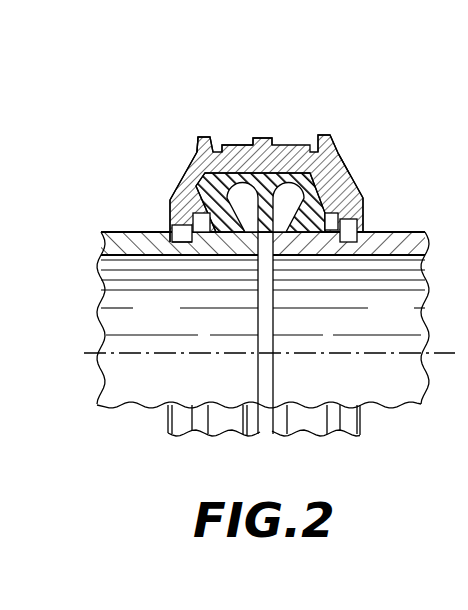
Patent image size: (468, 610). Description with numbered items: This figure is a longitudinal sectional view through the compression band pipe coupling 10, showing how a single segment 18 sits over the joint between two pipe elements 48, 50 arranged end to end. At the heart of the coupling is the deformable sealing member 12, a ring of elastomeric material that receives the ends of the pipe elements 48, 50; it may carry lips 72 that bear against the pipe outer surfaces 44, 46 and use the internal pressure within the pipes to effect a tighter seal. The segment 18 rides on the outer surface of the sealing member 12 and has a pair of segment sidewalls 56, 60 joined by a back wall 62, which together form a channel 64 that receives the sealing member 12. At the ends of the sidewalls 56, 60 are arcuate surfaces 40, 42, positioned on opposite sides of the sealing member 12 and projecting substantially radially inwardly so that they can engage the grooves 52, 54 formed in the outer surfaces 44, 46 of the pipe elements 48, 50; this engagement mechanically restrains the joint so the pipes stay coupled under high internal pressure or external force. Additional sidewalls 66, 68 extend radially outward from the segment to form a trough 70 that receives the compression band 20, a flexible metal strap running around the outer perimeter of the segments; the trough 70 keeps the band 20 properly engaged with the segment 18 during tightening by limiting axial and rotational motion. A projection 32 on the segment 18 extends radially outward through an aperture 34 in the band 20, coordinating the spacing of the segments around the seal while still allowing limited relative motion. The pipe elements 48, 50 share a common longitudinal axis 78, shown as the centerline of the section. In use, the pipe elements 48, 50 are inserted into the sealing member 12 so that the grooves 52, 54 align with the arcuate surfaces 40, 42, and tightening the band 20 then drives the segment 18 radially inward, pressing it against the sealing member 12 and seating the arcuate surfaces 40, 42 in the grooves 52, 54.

The compression band pipe coupling 10 is at (148, 436).
The sealing member 12 is at (357, 174).
The segments 18 is at (350, 148).
The compression band 20 is at (292, 147).
The projection 32 is at (256, 147).
The aperture 34 is at (238, 148).
The arcuate surface 40 is at (168, 210).
The arcuate surface 42 is at (365, 208).
The outer surface 44 is at (152, 231).
The outer surface 46 is at (370, 231).
The pipe element 48 is at (190, 390).
The pipe element 50 is at (365, 392).
The groove 52 is at (176, 240).
The groove 54 is at (343, 242).
The segment sidewall 56 is at (183, 186).
The segment sidewall 60 is at (360, 153).
The back wall 62 is at (230, 148).
The channel 64 is at (195, 152).
The additional sidewall 66 is at (203, 140).
The additional sidewall 68 is at (325, 142).
The trough 70 is at (222, 150).
The lips 72 is at (228, 233).
The longitudinal axis 78 is at (130, 353).